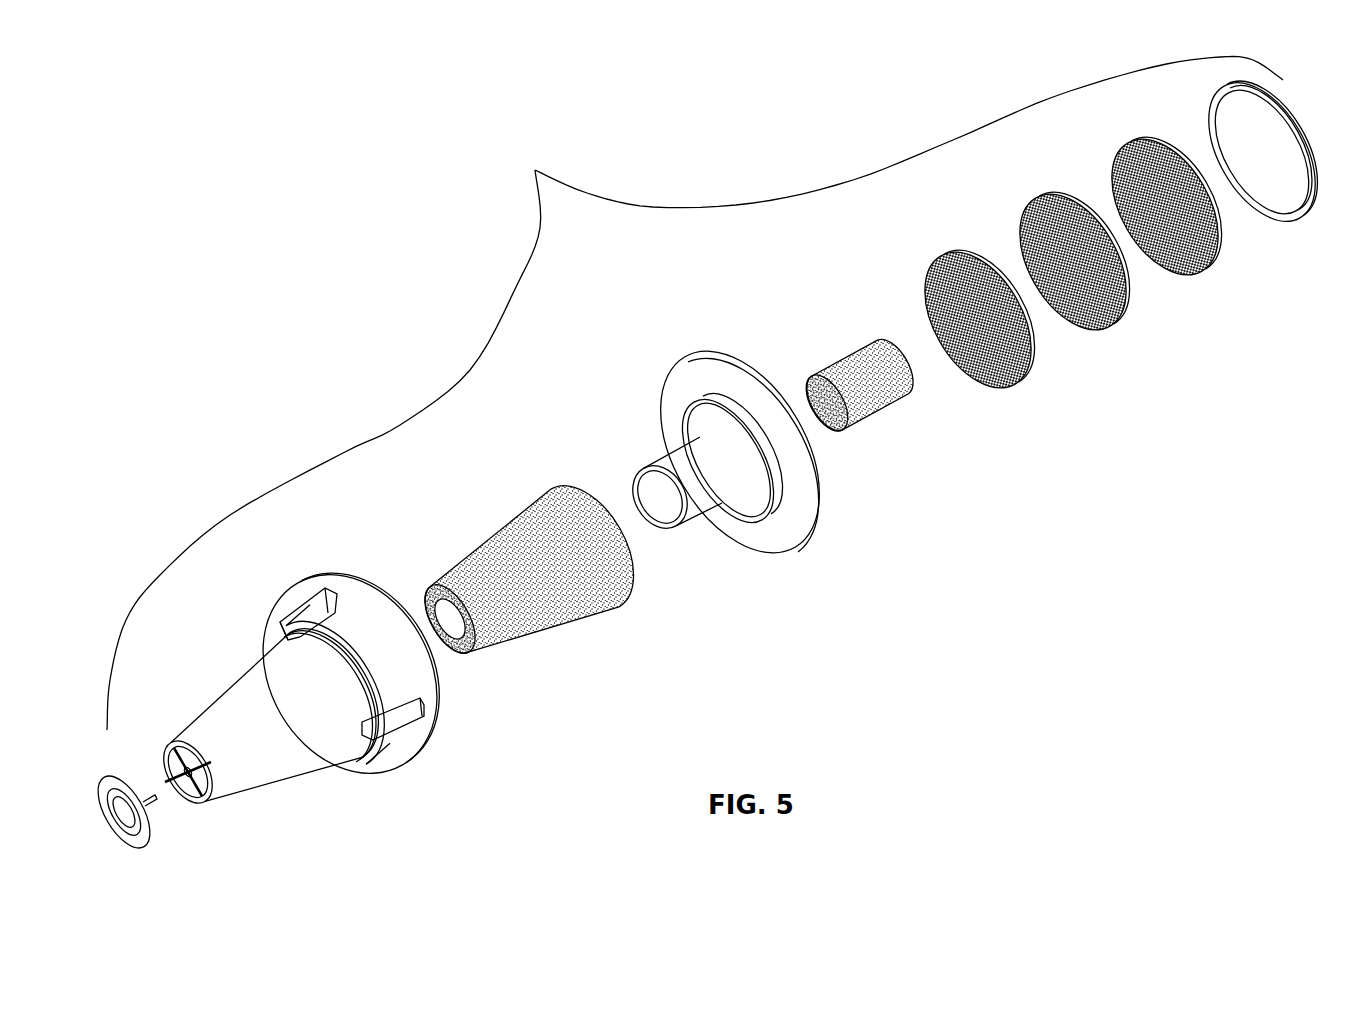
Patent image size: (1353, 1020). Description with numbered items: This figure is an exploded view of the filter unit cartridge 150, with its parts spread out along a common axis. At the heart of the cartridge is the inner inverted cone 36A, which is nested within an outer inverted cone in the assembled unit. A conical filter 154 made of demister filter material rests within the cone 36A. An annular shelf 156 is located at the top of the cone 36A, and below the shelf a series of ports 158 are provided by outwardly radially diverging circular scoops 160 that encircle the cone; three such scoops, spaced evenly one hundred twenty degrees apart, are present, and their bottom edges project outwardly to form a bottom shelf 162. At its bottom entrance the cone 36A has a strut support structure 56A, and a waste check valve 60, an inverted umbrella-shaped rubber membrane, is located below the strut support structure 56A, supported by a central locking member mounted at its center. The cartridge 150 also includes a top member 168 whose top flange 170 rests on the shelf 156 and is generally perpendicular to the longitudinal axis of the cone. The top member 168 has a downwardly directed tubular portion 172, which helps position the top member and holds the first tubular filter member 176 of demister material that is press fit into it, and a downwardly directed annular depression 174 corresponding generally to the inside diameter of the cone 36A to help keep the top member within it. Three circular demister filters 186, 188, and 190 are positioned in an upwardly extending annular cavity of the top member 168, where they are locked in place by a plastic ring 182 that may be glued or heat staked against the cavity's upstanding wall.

The cartridge 150 is at (695, 393).
The top member 168 is at (637, 295).
The waste check valve 60 is at (133, 780).
The inner inverted cone 36A is at (243, 697).
The strut support structure 56A is at (187, 795).
The conical filter 154 is at (427, 598).
The annular shelf 156 is at (407, 750).
The ports 158 is at (302, 623).
The circular scoops 160 is at (358, 640).
The bottom shelf 162 is at (367, 717).
The top flange 170 is at (700, 370).
The tubular portion 172 is at (660, 465).
The annular depression 174 is at (706, 417).
The first tubular filter member 176 is at (885, 412).
The plastic ring 182 is at (1222, 93).
The circular demister filter 186 is at (1200, 270).
The circular demister filter 188 is at (1113, 323).
The circular demister filter 190 is at (1012, 380).